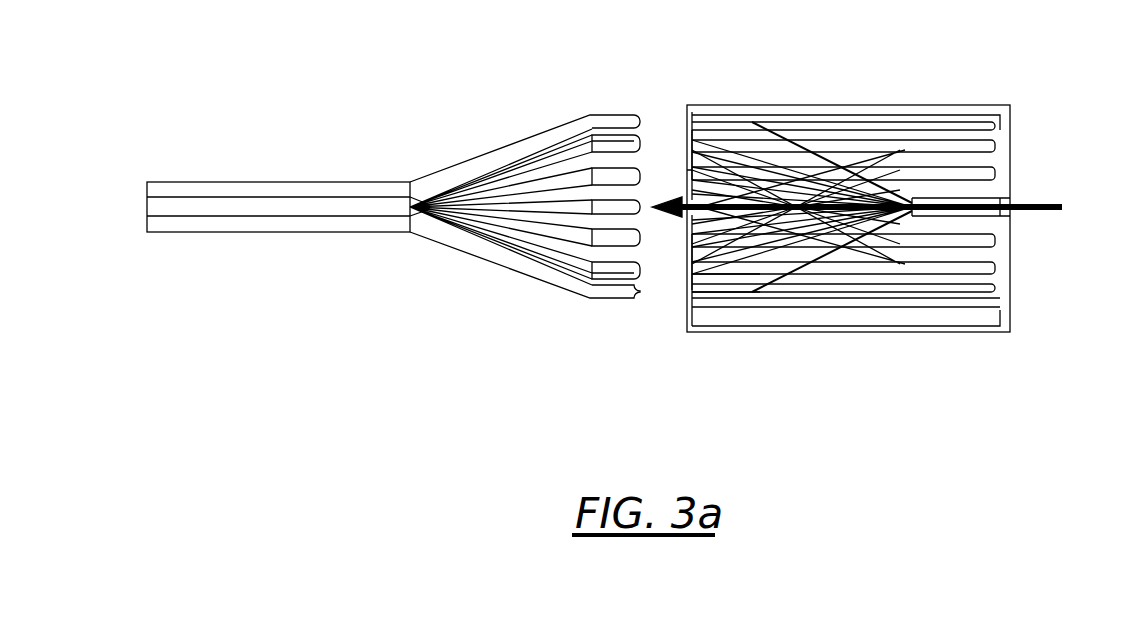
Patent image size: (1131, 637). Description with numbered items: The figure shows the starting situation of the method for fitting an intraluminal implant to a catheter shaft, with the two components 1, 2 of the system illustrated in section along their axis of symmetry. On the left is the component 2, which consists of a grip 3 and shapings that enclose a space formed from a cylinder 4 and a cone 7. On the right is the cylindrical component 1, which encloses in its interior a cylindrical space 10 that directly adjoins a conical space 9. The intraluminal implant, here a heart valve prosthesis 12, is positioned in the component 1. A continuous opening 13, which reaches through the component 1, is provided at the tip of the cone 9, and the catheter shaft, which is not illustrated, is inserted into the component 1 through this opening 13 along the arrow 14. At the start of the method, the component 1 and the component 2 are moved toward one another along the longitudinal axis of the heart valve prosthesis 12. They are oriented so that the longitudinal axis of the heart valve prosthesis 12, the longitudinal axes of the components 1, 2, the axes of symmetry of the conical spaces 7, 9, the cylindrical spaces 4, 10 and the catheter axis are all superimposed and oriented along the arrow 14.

The component 1 is at (813, 221).
The component 2 is at (393, 211).
The grip 3 is at (259, 170).
The cylinder 4 is at (610, 241).
The cone 7 is at (544, 236).
The conical space 9 is at (790, 267).
The cylindrical space 10 is at (681, 285).
The heart valve prosthesis 12 is at (679, 155).
The continuous opening 13 is at (920, 229).
The arrow 14 is at (880, 207).